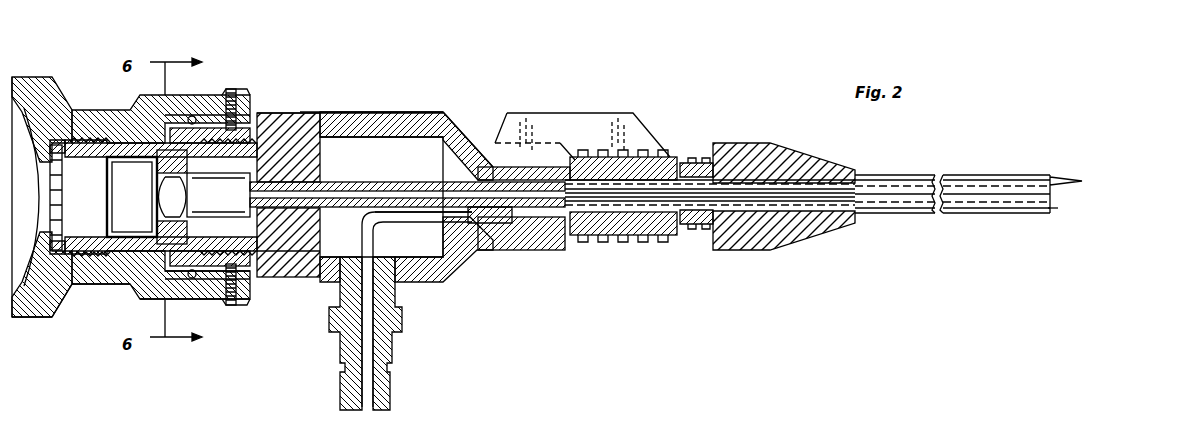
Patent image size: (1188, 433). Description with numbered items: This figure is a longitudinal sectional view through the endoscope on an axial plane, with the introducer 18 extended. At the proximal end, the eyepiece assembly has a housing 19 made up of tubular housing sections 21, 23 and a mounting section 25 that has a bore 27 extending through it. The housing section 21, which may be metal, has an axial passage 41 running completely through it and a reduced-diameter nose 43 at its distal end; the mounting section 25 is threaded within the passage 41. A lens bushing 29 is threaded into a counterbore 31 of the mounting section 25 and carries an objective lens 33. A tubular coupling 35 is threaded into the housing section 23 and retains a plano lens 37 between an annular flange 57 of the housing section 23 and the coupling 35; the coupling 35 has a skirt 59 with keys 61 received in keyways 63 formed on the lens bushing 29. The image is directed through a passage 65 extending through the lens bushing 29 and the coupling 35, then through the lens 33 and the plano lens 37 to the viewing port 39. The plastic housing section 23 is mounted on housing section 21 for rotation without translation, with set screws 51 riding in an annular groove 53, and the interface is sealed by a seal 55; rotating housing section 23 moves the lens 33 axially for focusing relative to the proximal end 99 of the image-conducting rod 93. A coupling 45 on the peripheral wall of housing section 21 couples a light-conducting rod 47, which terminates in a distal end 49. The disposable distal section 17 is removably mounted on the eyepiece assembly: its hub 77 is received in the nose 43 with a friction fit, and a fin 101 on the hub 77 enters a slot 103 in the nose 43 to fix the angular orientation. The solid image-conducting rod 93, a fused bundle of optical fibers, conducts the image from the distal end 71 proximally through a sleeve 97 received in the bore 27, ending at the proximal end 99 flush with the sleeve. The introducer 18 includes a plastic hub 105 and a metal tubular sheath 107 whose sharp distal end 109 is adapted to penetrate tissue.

The viewing port 39 is at (40, 77).
The plano lens 37 is at (50, 198).
The housing section 23 is at (76, 112).
The keyways 63 is at (172, 128).
The set screws 51 is at (233, 90).
The counterbore 31 is at (262, 143).
The objective lens 33 is at (158, 190).
The keys 61 is at (160, 205).
The passage 65 is at (252, 215).
The lens bushing 29 is at (258, 120).
The housing section 21 is at (428, 113).
The bore 27 is at (325, 161).
The mounting section 25 is at (310, 128).
The housing 19 is at (413, 95).
The sleeve 97 is at (368, 186).
The image-conducting rod 93 is at (352, 209).
The light-conducting rod 47 is at (420, 223).
The distal end 49 is at (462, 226).
The coupling 45 is at (398, 318).
The nose 43 is at (543, 250).
The axial passage 41 is at (468, 143).
The slot 103 is at (505, 142).
The fin 101 is at (585, 130).
The hub 77 is at (586, 244).
The distal section 17 is at (678, 142).
The introducer 18 is at (803, 139).
The hub 105 is at (800, 163).
The tubular sheath 107 is at (905, 175).
The distal end 109 is at (1052, 179).
The distal end 71 is at (1058, 208).
The proximal end 99 is at (268, 258).
The seal 55 is at (197, 298).
The annular groove 53 is at (208, 306).
The tubular coupling 35 is at (72, 295).
The annular flange 57 is at (38, 290).
The skirt 59 is at (82, 268).